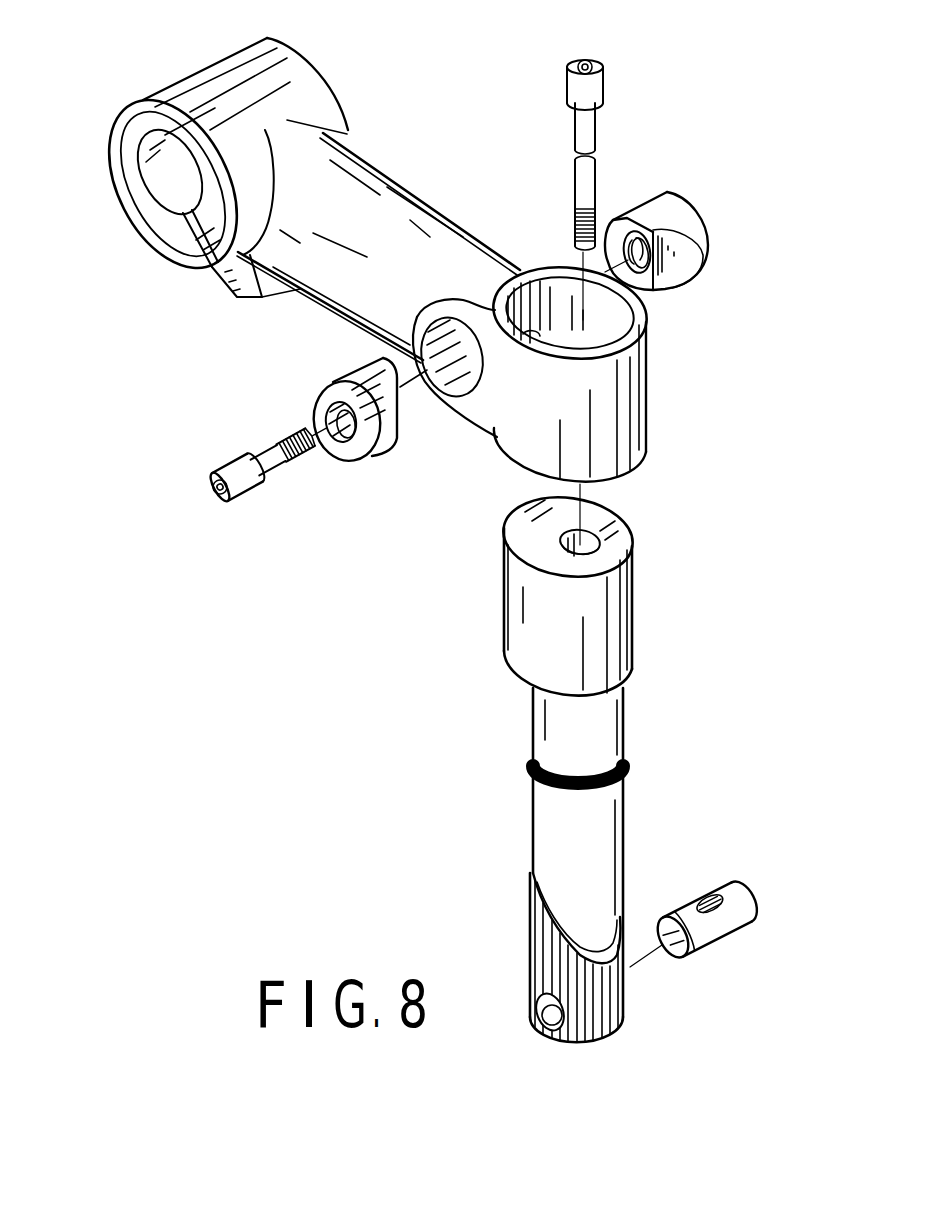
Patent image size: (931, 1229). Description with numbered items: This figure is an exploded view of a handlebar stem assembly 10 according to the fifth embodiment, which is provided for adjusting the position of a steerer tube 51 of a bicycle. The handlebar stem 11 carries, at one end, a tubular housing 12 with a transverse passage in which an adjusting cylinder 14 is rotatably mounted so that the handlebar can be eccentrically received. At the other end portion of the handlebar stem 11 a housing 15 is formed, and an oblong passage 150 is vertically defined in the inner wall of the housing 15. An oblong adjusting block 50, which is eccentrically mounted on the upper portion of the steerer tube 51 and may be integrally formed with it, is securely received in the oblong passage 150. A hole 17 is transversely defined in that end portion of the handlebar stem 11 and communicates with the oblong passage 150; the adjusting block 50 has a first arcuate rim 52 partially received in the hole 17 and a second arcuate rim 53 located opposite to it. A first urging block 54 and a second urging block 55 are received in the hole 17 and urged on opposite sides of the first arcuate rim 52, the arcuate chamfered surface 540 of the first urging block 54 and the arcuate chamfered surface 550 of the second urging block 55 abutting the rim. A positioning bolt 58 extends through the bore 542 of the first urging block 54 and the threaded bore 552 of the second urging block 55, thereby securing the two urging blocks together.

The handlebar stem assembly 10 is at (440, 184).
The handlebar stem 11 is at (330, 283).
The tubular housing 12 is at (290, 70).
The adjusting cylinder 14 is at (166, 219).
The housing 15 is at (555, 331).
The oblong passage 150 is at (562, 297).
The hole 17 is at (473, 380).
The oblong adjusting block 50 is at (569, 592).
The steerer tube 51 is at (531, 800).
The first arcuate rim 52 is at (521, 515).
The second arcuate rim 53 is at (603, 548).
The first urging block 54 is at (384, 458).
The arcuate chamfered surface 540 is at (397, 423).
The bore 542 is at (348, 433).
The second urging block 55 is at (706, 284).
The arcuate chamfered surface 550 is at (680, 265).
The threaded bore 552 is at (640, 268).
The positioning bolt 58 is at (258, 477).